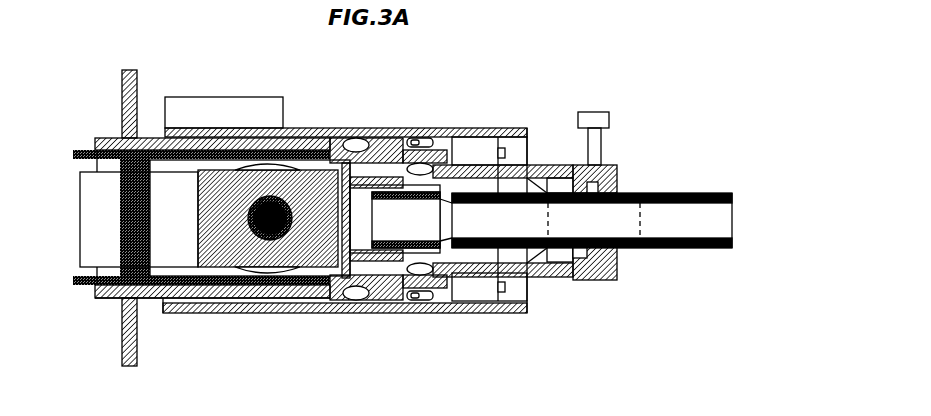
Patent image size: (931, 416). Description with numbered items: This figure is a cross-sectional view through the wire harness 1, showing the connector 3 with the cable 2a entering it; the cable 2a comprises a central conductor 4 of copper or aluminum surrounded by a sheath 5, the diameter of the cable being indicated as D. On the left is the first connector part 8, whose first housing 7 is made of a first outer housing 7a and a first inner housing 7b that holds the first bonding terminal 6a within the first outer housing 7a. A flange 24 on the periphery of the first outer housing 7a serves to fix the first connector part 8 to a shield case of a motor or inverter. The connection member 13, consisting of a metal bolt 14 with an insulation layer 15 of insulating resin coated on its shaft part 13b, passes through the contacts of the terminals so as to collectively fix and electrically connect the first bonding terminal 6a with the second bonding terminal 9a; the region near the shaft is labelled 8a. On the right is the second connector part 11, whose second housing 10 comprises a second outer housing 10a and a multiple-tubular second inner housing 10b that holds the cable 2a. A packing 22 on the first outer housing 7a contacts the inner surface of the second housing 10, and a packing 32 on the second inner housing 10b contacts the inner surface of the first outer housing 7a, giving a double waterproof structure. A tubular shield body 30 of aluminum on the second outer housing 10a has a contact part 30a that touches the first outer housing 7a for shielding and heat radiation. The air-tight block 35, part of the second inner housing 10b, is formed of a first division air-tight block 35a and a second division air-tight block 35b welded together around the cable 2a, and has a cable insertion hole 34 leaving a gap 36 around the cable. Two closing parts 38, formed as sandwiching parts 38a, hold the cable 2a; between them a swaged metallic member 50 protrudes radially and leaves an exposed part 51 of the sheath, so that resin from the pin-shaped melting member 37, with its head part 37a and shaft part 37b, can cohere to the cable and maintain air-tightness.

The wire harness 1 is at (392, 201).
The cable 2a is at (718, 194).
The connector 3 is at (278, 201).
The central conductor 4 is at (695, 231).
The sheath 5 is at (728, 249).
The first bonding terminal 6a is at (80, 209).
The first housing 7 is at (97, 138).
The first outer housing 7a is at (153, 298).
The first inner housing 7b is at (202, 298).
The first connector part 8 is at (97, 200).
The end block 8a is at (313, 178).
The second bonding terminal 9a is at (395, 185).
The second housing 10 is at (473, 130).
The second outer housing 10a is at (480, 313).
The second inner housing 10b is at (347, 283).
The second connector part 11 is at (552, 198).
The connection member 13 is at (283, 242).
The shaft part 13b is at (272, 202).
The bolt 14 is at (258, 240).
The insulation layer 15 is at (265, 240).
The packing 22 is at (362, 300).
The flange 24 is at (122, 333).
The tubular shield body 30 is at (513, 295).
The contact part 30a is at (417, 303).
The packing 32 is at (420, 167).
The cable insertion hole 34 is at (588, 281).
The air-tight block 35 is at (543, 163).
The first division air-tight block 35a is at (602, 281).
The second division air-tight block 35b is at (617, 165).
The gap 36 is at (617, 175).
The melting member 37 is at (629, 116).
The head part 37a is at (610, 112).
The shaft part 37b is at (604, 142).
The closing part 38 is at (620, 251).
The sandwiching part 38a is at (618, 258).
The metallic member 50 is at (613, 186).
The exposed part 51 is at (573, 183).
The tube diameter D is at (640, 224).